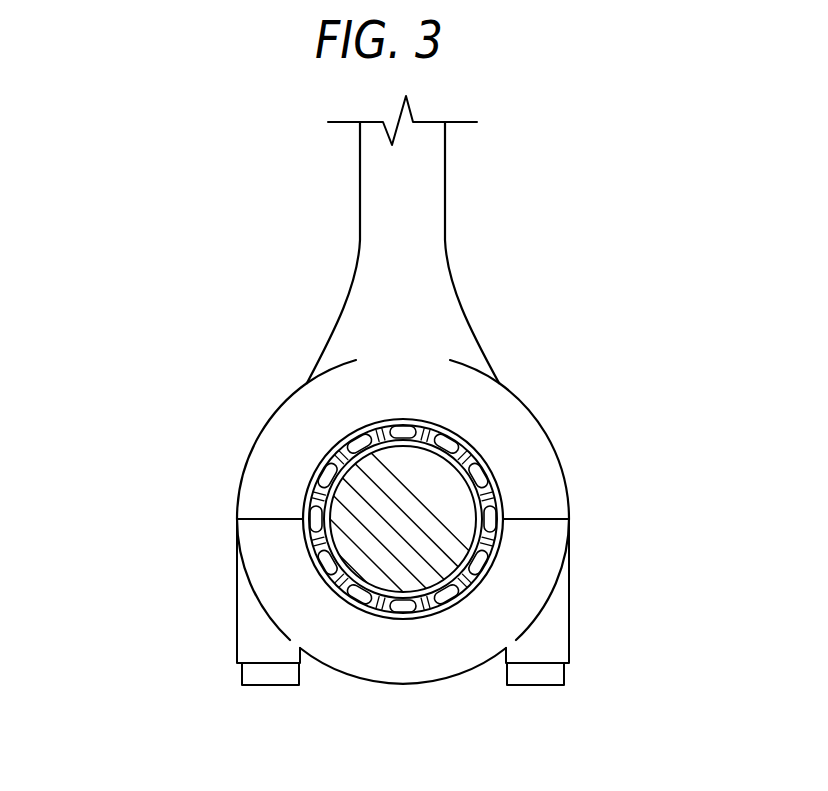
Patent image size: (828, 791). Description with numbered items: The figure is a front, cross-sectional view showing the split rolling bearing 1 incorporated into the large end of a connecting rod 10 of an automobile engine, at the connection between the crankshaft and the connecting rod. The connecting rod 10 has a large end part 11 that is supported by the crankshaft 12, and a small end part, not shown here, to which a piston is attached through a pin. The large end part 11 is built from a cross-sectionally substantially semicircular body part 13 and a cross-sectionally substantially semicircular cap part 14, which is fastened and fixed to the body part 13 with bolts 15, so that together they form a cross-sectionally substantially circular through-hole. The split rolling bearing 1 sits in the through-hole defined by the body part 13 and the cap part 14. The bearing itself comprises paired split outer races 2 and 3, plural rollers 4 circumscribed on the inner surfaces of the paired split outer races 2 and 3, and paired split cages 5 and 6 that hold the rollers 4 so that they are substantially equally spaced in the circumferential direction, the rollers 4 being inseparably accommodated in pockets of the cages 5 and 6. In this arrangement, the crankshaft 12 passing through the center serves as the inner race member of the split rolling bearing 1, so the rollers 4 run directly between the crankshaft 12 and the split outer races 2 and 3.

The split rolling bearing 1 is at (396, 541).
The split outer race 2 is at (413, 617).
The split outer race 3 is at (410, 427).
The rollers 4 is at (371, 431).
The split cage 5 is at (358, 597).
The split cage 6 is at (450, 437).
The connecting rod 10 is at (355, 416).
The large end part 11 is at (355, 548).
The crankshaft 12 is at (325, 458).
The body part 13 is at (253, 482).
The cap part 14 is at (247, 607).
The bolts 15 is at (273, 688).